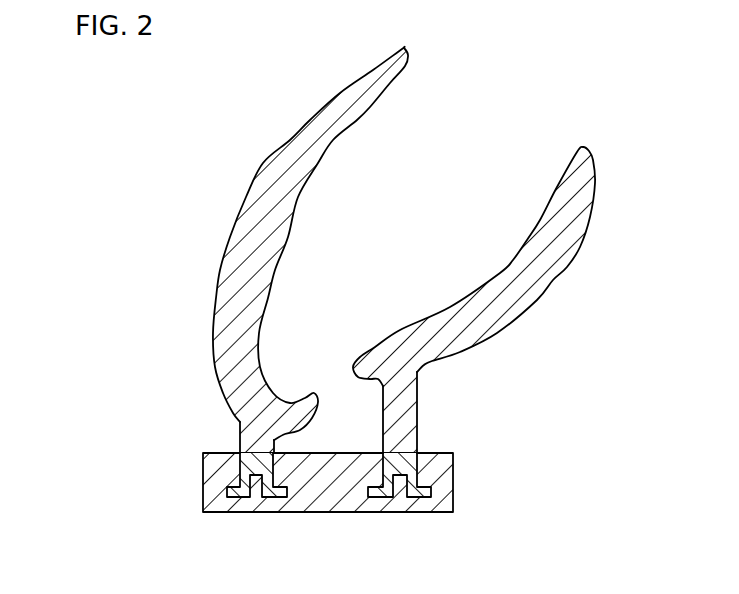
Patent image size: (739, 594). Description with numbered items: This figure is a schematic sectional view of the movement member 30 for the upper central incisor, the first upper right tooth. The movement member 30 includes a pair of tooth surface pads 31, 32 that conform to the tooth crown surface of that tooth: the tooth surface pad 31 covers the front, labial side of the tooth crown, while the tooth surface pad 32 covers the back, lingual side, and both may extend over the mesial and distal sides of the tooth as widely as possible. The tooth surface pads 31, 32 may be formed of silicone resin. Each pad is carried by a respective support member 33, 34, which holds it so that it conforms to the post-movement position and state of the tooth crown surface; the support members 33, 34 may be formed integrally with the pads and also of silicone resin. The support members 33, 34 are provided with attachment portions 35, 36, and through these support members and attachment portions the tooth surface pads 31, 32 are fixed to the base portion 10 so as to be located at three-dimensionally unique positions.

The base portion 10 is at (453, 496).
The movement member 30 is at (256, 101).
The tooth surface pad 31 is at (277, 245).
The tooth surface pad 32 is at (510, 261).
The support member 33 is at (240, 431).
The support member 34 is at (417, 408).
The attachment portion 35 is at (240, 470).
The attachment portion 36 is at (417, 467).